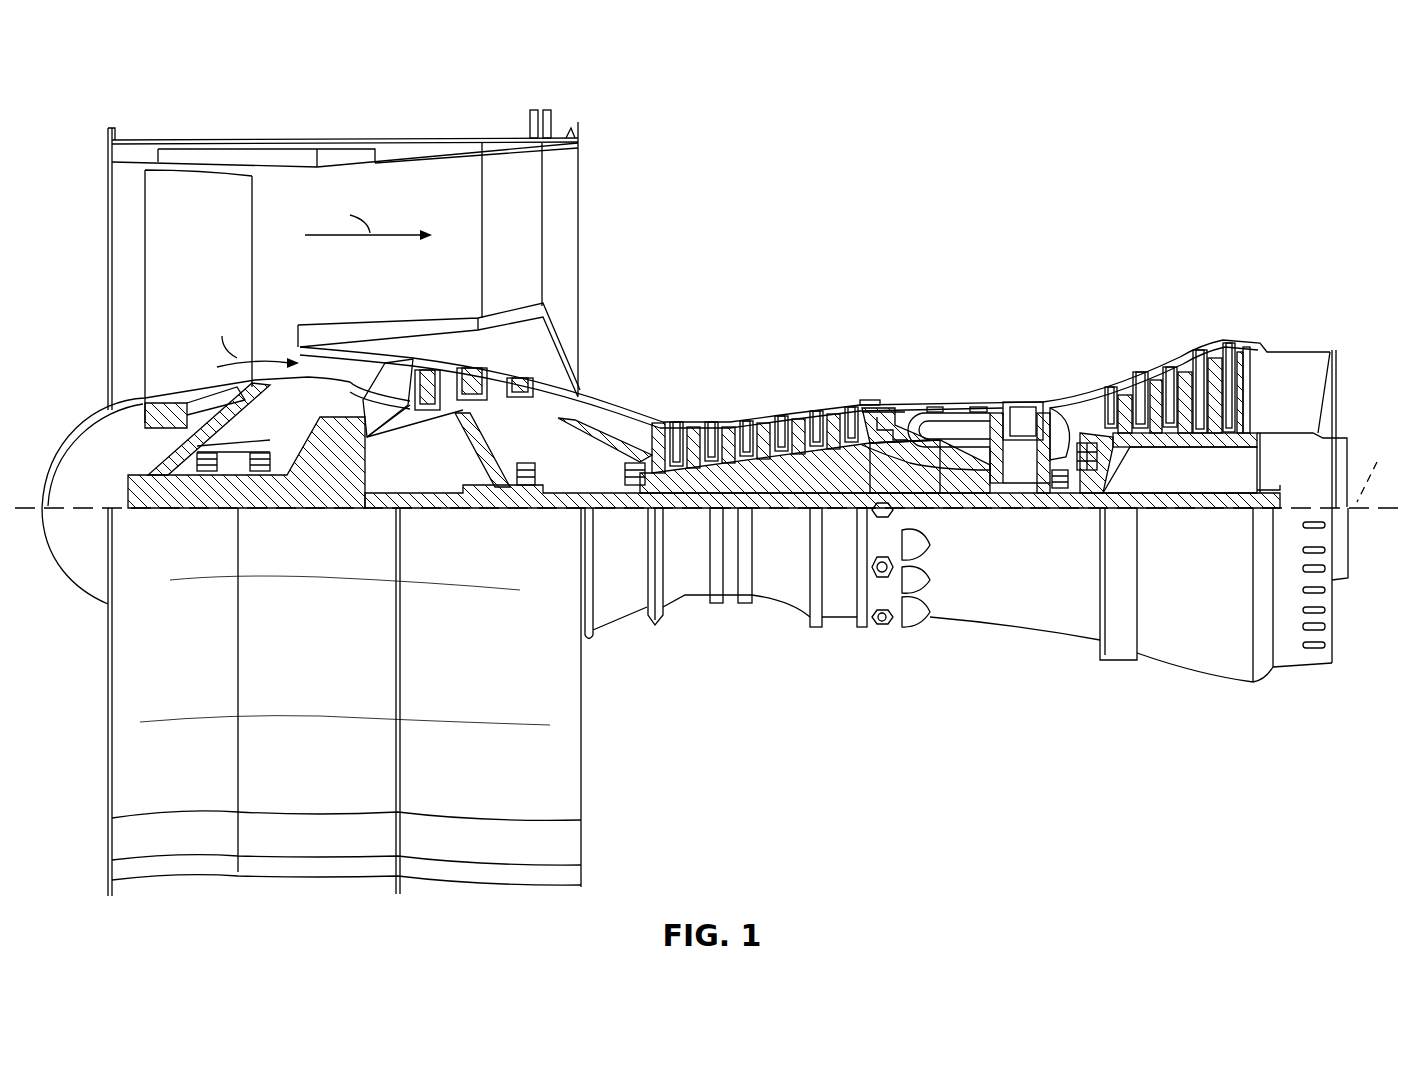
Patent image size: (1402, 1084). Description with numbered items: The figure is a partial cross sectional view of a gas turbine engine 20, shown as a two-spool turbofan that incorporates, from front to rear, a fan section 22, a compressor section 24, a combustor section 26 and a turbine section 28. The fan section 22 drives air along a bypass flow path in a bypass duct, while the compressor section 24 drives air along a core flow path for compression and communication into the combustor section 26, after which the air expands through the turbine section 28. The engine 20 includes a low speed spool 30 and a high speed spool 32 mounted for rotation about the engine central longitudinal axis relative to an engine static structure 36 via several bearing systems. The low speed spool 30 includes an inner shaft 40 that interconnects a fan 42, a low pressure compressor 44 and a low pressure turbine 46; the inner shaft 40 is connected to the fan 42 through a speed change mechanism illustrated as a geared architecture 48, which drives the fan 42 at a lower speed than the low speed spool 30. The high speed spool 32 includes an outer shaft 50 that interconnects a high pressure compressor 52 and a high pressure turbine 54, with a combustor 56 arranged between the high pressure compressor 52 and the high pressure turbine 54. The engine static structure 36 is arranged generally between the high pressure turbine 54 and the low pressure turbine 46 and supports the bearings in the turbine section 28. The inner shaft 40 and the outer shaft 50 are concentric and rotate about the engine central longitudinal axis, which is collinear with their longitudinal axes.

The gas turbine engine 20 is at (1158, 168).
The fan section 22 is at (213, 126).
The compressor section 24 is at (773, 355).
The combustor section 26 is at (933, 357).
The turbine section 28 is at (1088, 339).
The low speed spool 30 is at (807, 518).
The high speed spool 32 is at (877, 417).
The engine static structure 36 is at (838, 632).
The inner shaft 40 is at (593, 510).
The fan 42 is at (194, 267).
The low pressure compressor 44 is at (497, 383).
The low pressure turbine 46 is at (1187, 363).
The geared architecture 48 is at (345, 465).
The outer shaft 50 is at (968, 495).
The high pressure compressor 52 is at (760, 473).
The high pressure turbine 54 is at (1020, 405).
The combustor 56 is at (945, 423).